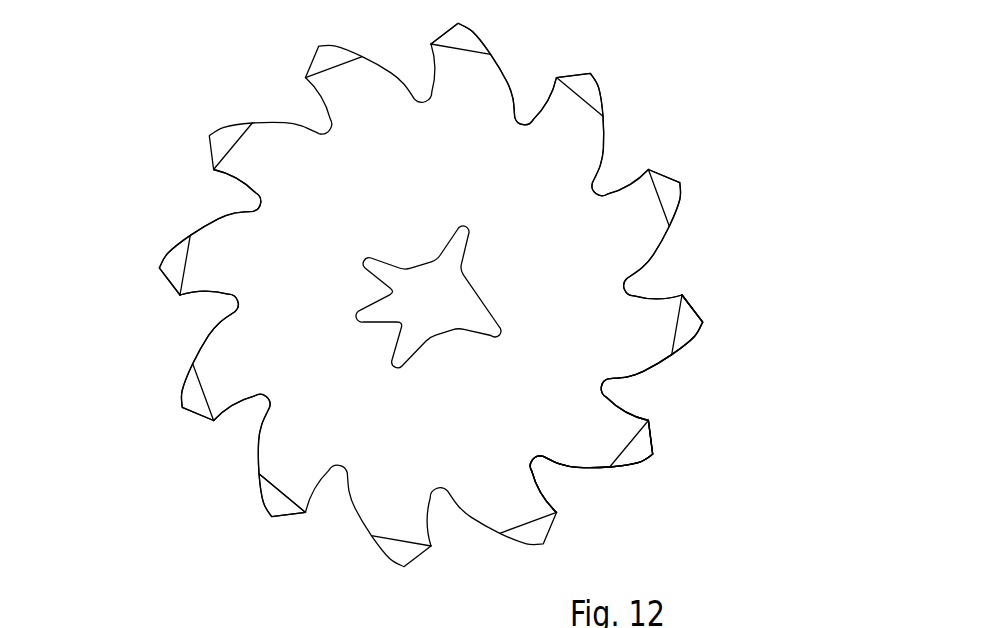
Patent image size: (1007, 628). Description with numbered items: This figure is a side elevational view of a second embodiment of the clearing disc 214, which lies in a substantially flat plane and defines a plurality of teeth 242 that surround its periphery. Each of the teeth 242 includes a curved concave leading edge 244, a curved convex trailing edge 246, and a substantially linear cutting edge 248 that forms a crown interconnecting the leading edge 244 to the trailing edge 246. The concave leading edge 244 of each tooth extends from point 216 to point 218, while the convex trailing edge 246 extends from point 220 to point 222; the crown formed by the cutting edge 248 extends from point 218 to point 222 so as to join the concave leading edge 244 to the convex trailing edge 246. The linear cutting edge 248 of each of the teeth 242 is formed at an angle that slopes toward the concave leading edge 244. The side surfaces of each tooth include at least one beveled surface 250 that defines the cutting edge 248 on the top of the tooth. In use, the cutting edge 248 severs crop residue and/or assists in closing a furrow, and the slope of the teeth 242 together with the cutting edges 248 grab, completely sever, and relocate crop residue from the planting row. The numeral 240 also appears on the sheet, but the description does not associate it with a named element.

The clearing disc 214 is at (697, 127).
The point 216 is at (527, 128).
The point 218 is at (557, 78).
The point 220 is at (532, 458).
The point 222 is at (652, 460).
The cutter assembly 240 is at (360, 620).
The teeth 242 is at (218, 225).
The curved concave leading edge 244 is at (648, 300).
The curved convex trailing edge 246 is at (643, 377).
The substantially linear cutting edge 248 is at (697, 308).
The beveled surface 250 is at (277, 497).